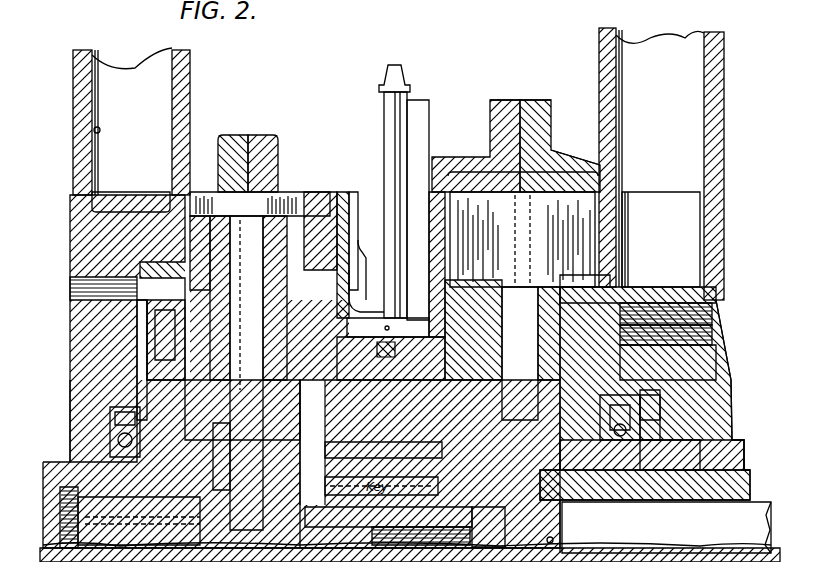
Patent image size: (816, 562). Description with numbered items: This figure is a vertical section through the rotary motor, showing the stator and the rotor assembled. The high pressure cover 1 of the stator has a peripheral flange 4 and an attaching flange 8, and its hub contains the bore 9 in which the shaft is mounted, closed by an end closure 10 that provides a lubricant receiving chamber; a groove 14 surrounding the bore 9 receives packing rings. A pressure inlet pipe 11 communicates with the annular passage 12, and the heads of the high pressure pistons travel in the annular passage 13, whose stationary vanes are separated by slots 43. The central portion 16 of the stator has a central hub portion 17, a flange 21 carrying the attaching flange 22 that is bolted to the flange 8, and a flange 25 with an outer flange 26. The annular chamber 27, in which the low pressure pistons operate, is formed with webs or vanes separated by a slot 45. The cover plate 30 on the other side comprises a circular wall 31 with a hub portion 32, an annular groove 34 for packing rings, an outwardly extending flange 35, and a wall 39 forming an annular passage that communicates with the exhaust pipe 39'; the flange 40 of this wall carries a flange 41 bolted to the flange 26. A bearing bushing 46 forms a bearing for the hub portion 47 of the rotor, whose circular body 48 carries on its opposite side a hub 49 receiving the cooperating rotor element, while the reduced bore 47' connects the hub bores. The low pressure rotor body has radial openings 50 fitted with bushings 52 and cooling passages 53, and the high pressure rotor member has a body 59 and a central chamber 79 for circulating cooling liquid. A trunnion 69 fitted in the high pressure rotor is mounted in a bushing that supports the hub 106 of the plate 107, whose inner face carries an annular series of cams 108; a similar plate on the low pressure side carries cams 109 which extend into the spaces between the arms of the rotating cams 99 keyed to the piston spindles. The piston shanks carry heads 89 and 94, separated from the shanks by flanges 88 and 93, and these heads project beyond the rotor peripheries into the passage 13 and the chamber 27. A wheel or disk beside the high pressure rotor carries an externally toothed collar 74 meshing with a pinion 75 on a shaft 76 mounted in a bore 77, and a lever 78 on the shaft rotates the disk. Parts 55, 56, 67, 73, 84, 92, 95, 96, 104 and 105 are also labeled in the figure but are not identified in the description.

The high pressure cover 1 is at (46, 200).
The flange 4 is at (343, 63).
The flange 8 is at (232, 146).
The bore 9 is at (45, 553).
The end closure 10 is at (55, 478).
The pressure inlet pipe 11 is at (83, 92).
The annular passage 12 is at (90, 131).
The annular passage 13 is at (198, 190).
The groove 14 is at (95, 420).
The central portion of the stator 16 is at (320, 196).
The central hub portion 17 is at (388, 327).
The flange 21 is at (291, 192).
The attaching flange 22 is at (263, 152).
The flange 25 is at (470, 157).
The flange 26 is at (505, 100).
The annular chamber 27 is at (432, 206).
The cover plate 30 is at (722, 380).
The circular wall 31 is at (702, 345).
The hub portion 32 is at (720, 440).
The annular groove 34 is at (706, 422).
The flange 35 is at (722, 302).
The wall 39 is at (660, 239).
The exhaust pipe 39' is at (683, 164).
The flange 40 is at (558, 162).
The flange 41 is at (545, 100).
The slots 43 is at (131, 198).
The slot 45 is at (545, 216).
The bearing bushing 46 is at (746, 462).
The hub portion 47 is at (659, 485).
The reduced bore 47' is at (421, 527).
The circular body 48 is at (736, 446).
The hub 49 is at (430, 464).
The radial openings 50 is at (598, 506).
The bushings 52 is at (662, 448).
The passages 53 is at (706, 318).
The upper block 55 is at (600, 285).
The gasket 56 is at (610, 276).
The body 59 is at (716, 363).
The lower shaft 67 is at (60, 530).
The trunnion 69 is at (60, 516).
The sleeve wall 73 is at (325, 200).
The externally toothed collar 74 is at (351, 195).
The pinion 75 is at (360, 226).
The shaft 76 is at (410, 318).
The bore 77 is at (366, 276).
The lever 78 is at (406, 137).
The chamber 79 is at (388, 484).
The bearing housing 84 is at (60, 506).
The flange 88 is at (283, 192).
The head 89 is at (210, 190).
The packing ring 92 is at (614, 301).
The flange 93 is at (621, 194).
The head 94 is at (602, 190).
The pin 95 is at (560, 540).
The bracket wall 96 is at (560, 515).
The rotating cams 99 is at (130, 333).
The ball bearing housing 104 is at (716, 402).
The piston rod 105 is at (512, 380).
The hub 106 is at (108, 450).
The plate 107 is at (125, 420).
The cams 108 is at (132, 392).
The cams 109 is at (658, 400).